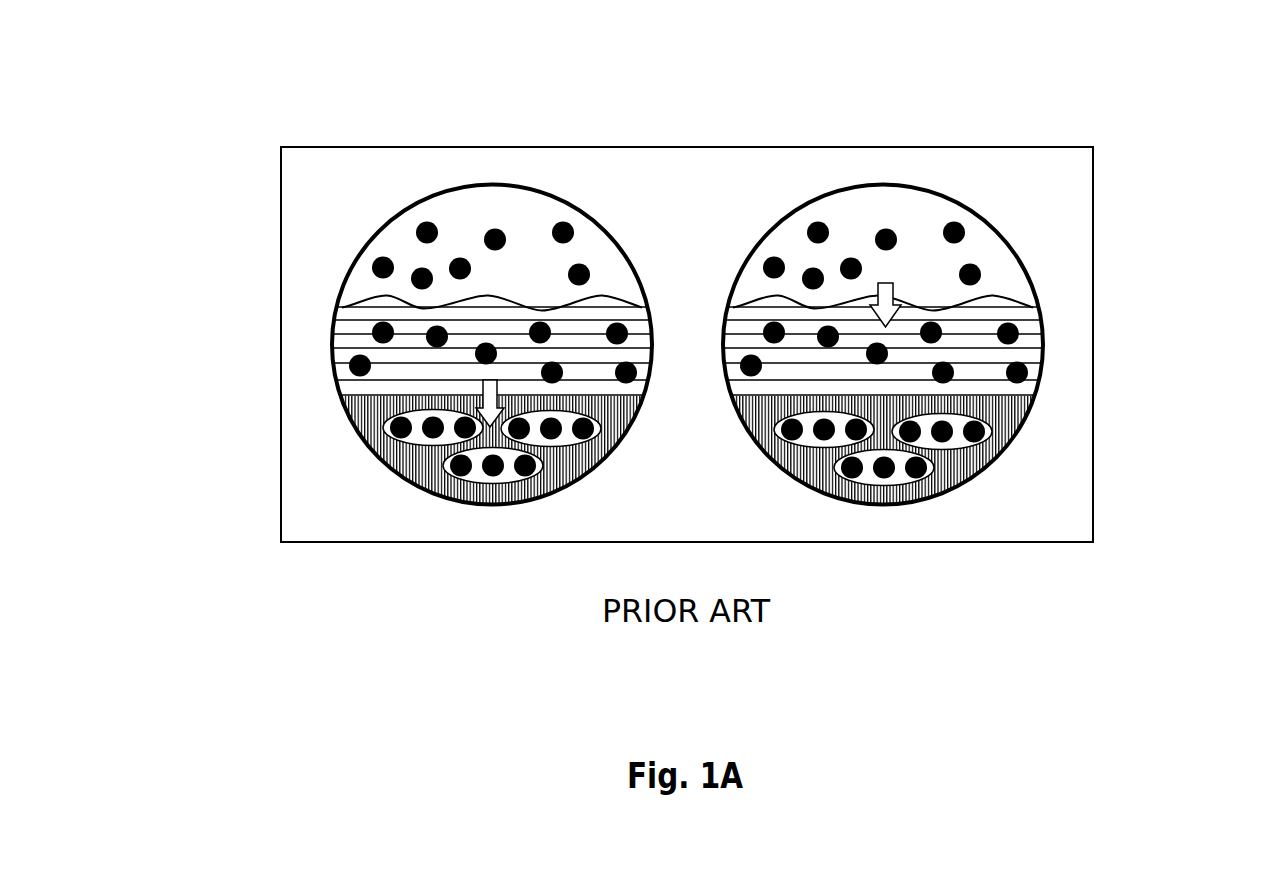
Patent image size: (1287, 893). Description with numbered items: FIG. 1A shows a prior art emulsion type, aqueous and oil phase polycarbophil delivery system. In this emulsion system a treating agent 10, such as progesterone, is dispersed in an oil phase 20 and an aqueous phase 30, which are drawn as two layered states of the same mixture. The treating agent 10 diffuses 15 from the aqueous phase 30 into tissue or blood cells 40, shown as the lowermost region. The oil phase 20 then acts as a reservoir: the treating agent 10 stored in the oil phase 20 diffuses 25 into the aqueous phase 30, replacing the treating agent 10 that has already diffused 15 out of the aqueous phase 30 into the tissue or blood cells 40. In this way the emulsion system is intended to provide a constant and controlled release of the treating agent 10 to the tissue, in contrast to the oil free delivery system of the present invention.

The treating agent 10 is at (370, 263).
The diffusion into tissue 15 is at (435, 190).
The oil phase 20 is at (523, 252).
The diffusion into aqueous phase 25 is at (832, 193).
The aqueous phase 30 is at (352, 347).
The tissue or blood cells 40 is at (403, 458).